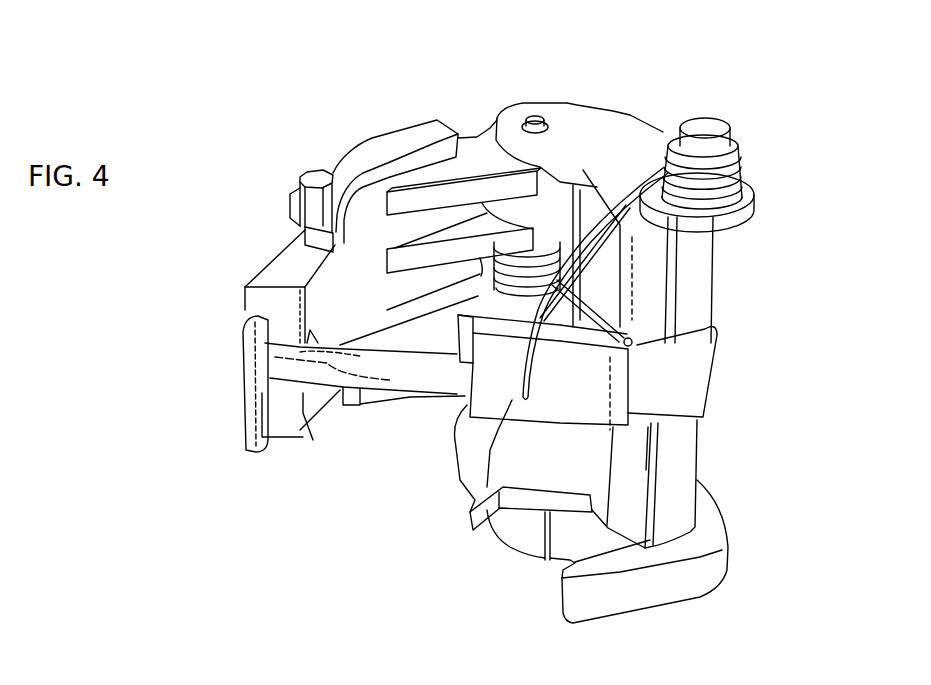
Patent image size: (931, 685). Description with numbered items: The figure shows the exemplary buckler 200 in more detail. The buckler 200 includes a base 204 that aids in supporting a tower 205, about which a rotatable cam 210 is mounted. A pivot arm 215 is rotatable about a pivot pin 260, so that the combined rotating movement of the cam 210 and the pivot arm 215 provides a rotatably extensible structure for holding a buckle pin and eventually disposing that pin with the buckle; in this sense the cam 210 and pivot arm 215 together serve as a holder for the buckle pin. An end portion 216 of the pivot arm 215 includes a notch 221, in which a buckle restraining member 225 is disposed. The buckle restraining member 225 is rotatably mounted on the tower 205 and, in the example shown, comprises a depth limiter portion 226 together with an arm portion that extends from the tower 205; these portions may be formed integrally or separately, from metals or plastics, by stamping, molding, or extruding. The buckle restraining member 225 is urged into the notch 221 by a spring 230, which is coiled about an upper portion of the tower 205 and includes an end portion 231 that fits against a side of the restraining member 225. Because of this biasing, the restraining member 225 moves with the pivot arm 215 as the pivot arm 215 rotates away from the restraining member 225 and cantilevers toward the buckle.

The buckler 200 is at (205, 58).
The base 204 is at (670, 555).
The tower 205 is at (703, 290).
The rotatable cam 210 is at (577, 122).
The pivot arm 215 is at (362, 228).
The end portion 216 is at (258, 301).
The notch 221 is at (283, 393).
The buckle restraining member 225 is at (490, 390).
The depth limiter portion 226 is at (243, 390).
The spring 230 is at (713, 187).
The end portion 231 is at (513, 402).
The pivot pin 260 is at (522, 121).